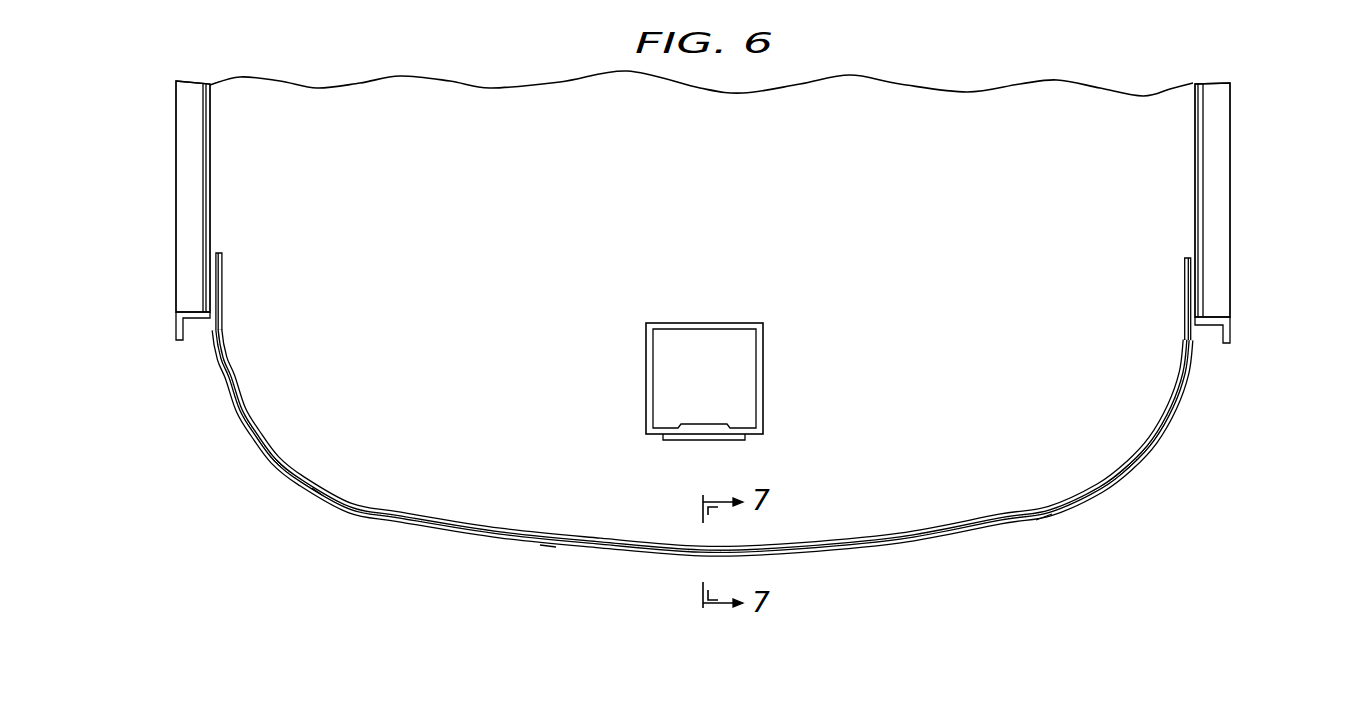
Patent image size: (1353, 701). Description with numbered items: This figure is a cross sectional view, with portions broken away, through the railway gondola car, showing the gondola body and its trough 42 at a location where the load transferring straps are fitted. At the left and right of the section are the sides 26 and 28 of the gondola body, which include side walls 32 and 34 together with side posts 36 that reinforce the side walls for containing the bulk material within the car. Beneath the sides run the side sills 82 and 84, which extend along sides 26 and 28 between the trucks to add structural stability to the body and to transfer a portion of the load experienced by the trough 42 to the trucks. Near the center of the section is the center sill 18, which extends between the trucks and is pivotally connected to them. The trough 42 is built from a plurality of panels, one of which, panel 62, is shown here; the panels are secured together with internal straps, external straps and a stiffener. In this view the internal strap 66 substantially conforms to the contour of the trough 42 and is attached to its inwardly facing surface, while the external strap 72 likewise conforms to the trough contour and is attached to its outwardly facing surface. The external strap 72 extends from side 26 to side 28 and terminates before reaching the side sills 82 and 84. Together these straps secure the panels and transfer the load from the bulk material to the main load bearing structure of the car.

The center sill 18 is at (646, 355).
The side 26 is at (112, 164).
The side 28 is at (1292, 166).
The side wall 32 is at (203, 130).
The side wall 34 is at (1205, 133).
The side post 36 is at (176, 233).
The trough 42 is at (703, 442).
The panel 62 is at (548, 548).
The internal strap 66 is at (355, 500).
The external strap 72 is at (1045, 525).
The side sill 82 is at (1232, 330).
The side sill 84 is at (178, 325).